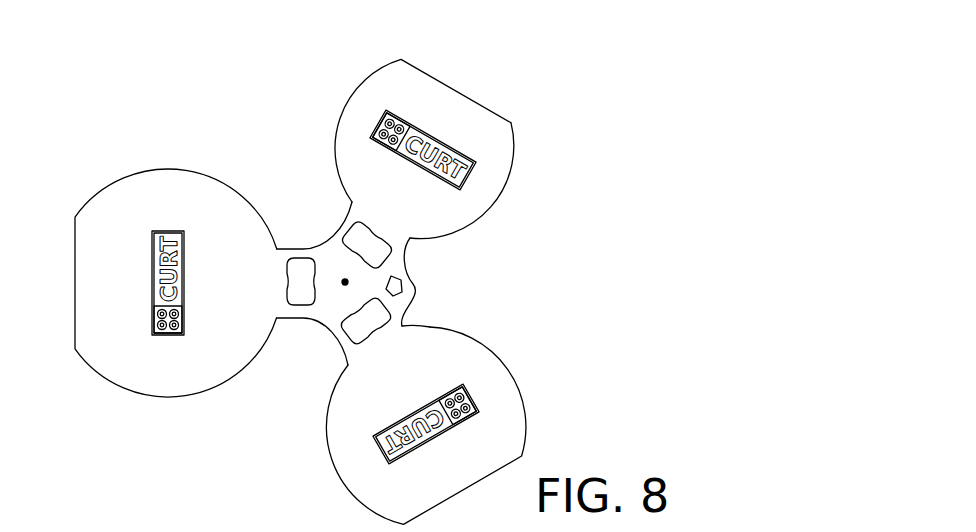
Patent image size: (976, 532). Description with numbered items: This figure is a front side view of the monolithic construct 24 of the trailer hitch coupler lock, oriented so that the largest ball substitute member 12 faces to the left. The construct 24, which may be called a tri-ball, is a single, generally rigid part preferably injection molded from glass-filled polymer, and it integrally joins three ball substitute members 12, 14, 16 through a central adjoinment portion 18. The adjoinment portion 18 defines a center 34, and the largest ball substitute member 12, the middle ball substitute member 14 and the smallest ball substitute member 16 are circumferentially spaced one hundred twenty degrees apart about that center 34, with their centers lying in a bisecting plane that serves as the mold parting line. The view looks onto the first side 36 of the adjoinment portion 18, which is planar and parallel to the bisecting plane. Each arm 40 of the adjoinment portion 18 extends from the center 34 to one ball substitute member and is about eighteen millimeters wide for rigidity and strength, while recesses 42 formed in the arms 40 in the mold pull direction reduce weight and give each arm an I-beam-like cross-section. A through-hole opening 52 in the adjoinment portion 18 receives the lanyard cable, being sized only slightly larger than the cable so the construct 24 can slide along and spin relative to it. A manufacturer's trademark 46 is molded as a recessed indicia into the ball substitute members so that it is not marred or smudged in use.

The largest ball substitute member 12 is at (142, 193).
The middle ball substitute member 14 is at (343, 430).
The smallest ball substitute member 16 is at (497, 178).
The adjoinment portion 18 is at (320, 304).
The monolithic construct 24 is at (145, 83).
The center 34 is at (345, 282).
The first side 36 is at (346, 307).
The arm 40 is at (387, 333).
The recess 42 is at (302, 277).
The trademark 46 is at (442, 382).
The through-hole opening 52 is at (397, 283).